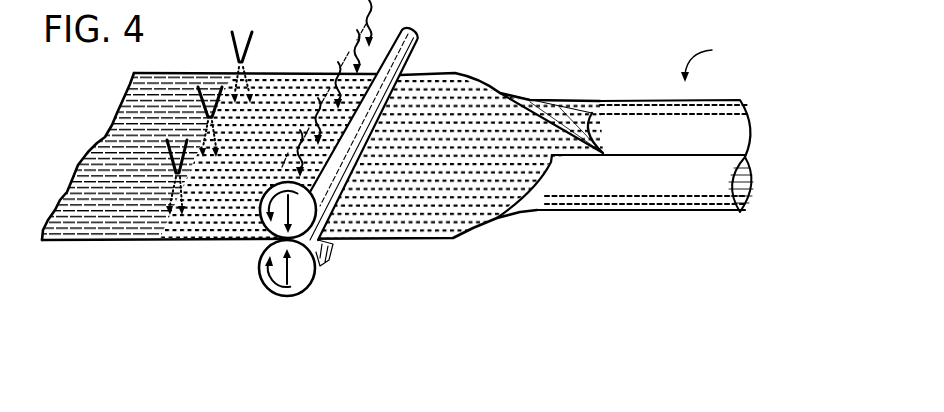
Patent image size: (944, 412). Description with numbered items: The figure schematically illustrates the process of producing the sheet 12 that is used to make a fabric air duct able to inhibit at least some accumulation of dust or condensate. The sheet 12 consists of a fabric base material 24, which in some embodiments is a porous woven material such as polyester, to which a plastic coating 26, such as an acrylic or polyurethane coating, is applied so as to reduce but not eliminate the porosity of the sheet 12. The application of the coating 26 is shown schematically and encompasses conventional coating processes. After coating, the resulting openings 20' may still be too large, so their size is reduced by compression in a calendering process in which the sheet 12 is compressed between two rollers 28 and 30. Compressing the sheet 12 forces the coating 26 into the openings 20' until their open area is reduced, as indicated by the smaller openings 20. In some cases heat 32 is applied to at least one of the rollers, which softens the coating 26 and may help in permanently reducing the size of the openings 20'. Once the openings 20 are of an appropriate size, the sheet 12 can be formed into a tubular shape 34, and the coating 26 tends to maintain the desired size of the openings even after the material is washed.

The sheet 12 is at (630, 100).
The openings 20 is at (326, 143).
The openings 20' is at (280, 125).
The fabric base material 24 is at (163, 72).
The plastic coating 26 is at (243, 68).
The roller 28 is at (407, 28).
The roller 30 is at (333, 263).
The heat 32 is at (375, 22).
The tubular shape 34 is at (708, 61).